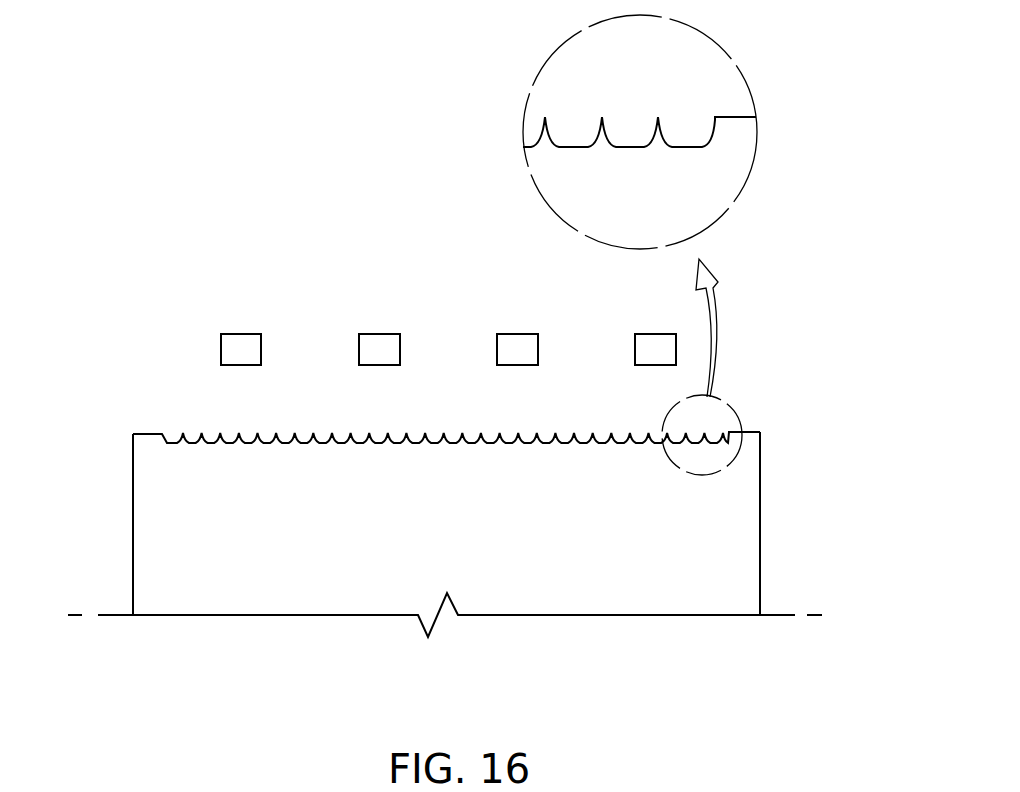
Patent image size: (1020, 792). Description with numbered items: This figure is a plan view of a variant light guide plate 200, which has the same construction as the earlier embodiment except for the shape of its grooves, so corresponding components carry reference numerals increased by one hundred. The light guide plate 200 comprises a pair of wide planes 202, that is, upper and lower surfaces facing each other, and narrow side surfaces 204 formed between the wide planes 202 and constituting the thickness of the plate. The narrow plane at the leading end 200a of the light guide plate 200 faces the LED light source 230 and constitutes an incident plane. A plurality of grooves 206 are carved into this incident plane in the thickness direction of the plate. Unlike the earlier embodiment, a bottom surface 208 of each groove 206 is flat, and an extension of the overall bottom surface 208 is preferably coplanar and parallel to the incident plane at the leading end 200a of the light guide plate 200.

The light guide plate 200 is at (457, 410).
The leading end 200a is at (767, 417).
The wide planes 202 is at (182, 557).
The side surfaces 204 is at (131, 494).
The grooves 206 is at (670, 137).
The bottom surface 208 is at (692, 148).
The LED light source 230 is at (375, 338).